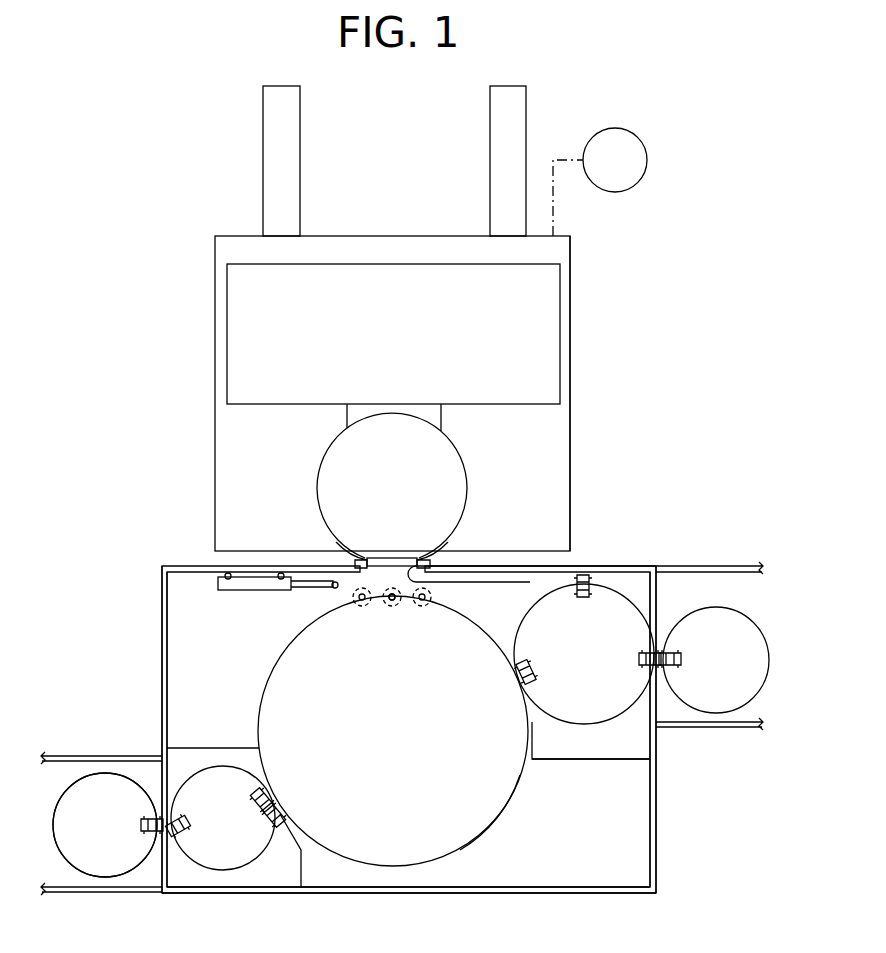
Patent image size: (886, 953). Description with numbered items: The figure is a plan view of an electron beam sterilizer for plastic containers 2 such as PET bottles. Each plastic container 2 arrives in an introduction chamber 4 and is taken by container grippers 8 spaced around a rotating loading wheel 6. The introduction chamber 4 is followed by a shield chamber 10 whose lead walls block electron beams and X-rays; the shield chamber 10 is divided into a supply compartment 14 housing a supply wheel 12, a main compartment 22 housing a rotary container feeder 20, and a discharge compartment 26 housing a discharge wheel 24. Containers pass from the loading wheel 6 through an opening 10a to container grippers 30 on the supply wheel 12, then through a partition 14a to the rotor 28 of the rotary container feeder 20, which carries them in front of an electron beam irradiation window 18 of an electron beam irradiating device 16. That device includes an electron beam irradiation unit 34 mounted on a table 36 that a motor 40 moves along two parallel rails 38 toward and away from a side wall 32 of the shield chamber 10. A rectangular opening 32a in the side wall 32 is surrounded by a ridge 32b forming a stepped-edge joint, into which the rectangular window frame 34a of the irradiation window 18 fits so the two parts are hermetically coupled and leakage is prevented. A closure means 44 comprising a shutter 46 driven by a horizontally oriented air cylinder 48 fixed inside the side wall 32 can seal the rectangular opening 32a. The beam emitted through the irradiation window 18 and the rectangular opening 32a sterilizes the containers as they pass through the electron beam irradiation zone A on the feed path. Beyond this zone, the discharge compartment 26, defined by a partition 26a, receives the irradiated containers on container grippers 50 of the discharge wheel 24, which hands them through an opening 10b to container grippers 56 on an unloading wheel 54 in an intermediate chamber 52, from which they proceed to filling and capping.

The plastic container 2 is at (357, 607).
The introduction chamber 4 is at (58, 785).
The loading wheel 6 is at (98, 790).
The container gripper 8 is at (145, 840).
The shield chamber 10 is at (664, 798).
The opening 10a is at (160, 790).
The opening 10b is at (658, 622).
The supply wheel 12 is at (243, 843).
The supply compartment 14 is at (197, 762).
The partition 14a is at (305, 862).
The electron beam irradiating device 16 is at (207, 300).
The electron beam irradiation window 18 is at (393, 558).
The rotary container feeder 20 is at (518, 807).
The main compartment 22 is at (640, 853).
The discharge wheel 24 is at (618, 690).
The discharge compartment 26 is at (582, 742).
The partition 26a is at (560, 762).
The rotor 28 is at (485, 812).
The container gripper 30 is at (270, 795).
The side wall 32 is at (540, 566).
The rectangular opening 32a is at (455, 587).
The ridge 32b is at (432, 560).
The electron beam irradiation unit 34 is at (467, 470).
The rectangular window frame 34a is at (352, 560).
The table 36 is at (572, 422).
The rail 38 is at (262, 170).
The motor 40 is at (615, 192).
The closure means 44 is at (253, 622).
The shutter 46 is at (330, 592).
The air cylinder 48 is at (253, 590).
The container gripper 50 is at (577, 597).
The intermediate chamber 52 is at (712, 590).
The unloading wheel 54 is at (740, 628).
The container gripper 56 is at (680, 664).
The electron beam irradiation zone A is at (378, 613).